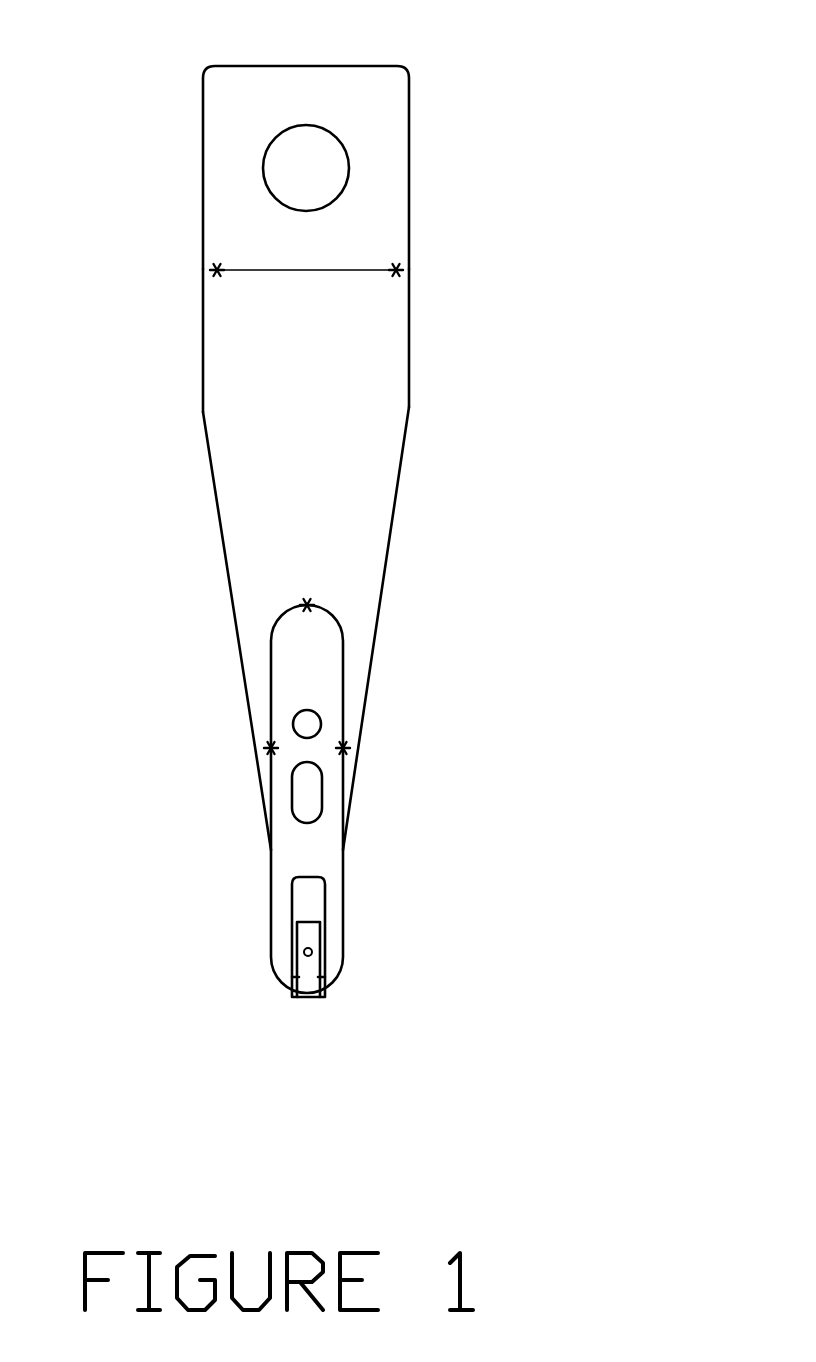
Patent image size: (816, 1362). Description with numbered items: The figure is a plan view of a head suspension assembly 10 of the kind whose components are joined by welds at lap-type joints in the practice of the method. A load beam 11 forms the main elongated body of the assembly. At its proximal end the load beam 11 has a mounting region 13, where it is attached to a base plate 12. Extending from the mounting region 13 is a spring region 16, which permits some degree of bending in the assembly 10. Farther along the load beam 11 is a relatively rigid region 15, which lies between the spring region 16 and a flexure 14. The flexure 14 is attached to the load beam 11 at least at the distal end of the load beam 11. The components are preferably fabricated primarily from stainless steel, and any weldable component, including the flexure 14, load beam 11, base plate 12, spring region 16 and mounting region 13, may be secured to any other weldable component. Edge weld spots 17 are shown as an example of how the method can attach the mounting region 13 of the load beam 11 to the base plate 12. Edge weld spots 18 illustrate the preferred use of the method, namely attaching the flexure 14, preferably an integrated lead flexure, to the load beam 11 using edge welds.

The head suspension assembly 10 is at (163, 483).
The load beam 11 is at (323, 446).
The base plate 12 is at (409, 97).
The mounting region 13 is at (409, 222).
The flexure 14 is at (265, 893).
The rigid region 15 is at (378, 621).
The spring region 16 is at (203, 334).
The edge weld spots 17 is at (393, 265).
The edge weld spots 18 is at (268, 748).